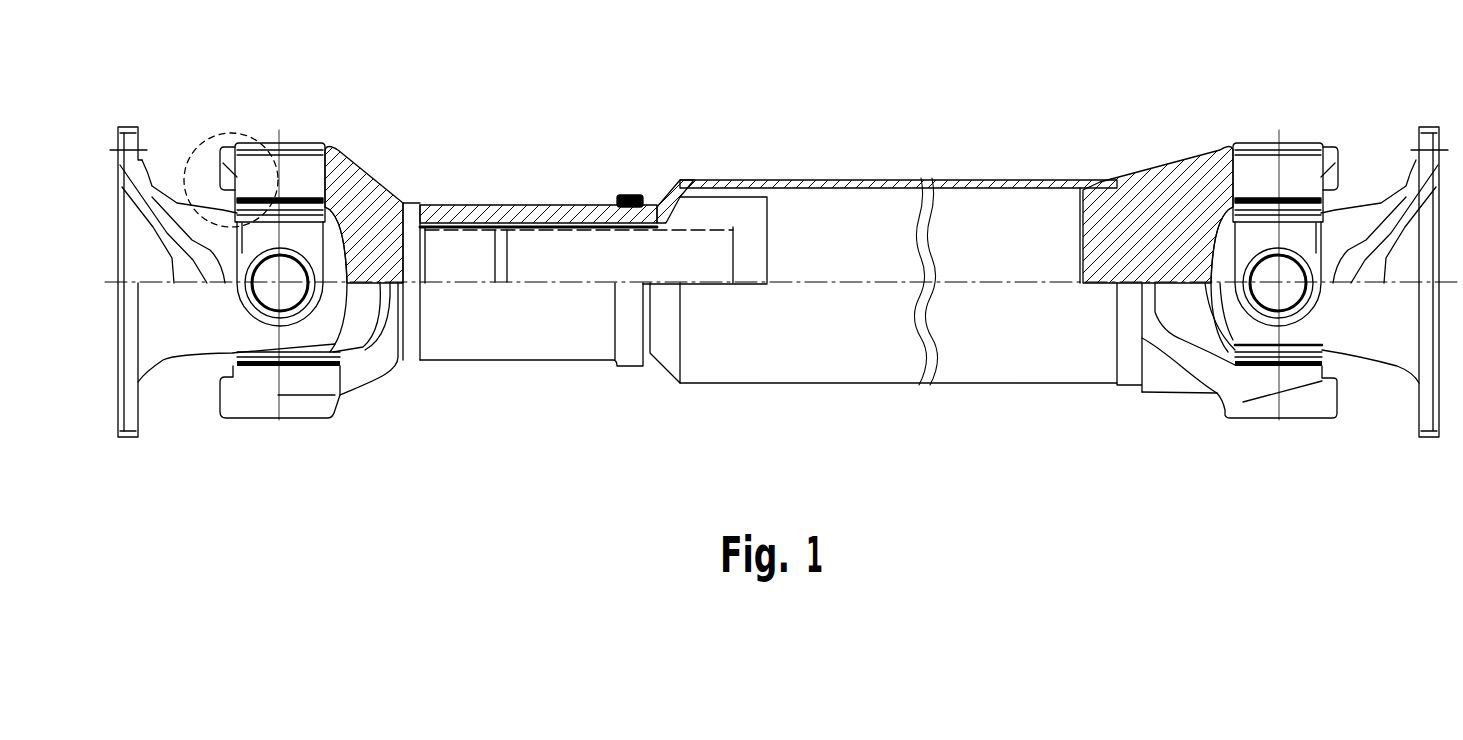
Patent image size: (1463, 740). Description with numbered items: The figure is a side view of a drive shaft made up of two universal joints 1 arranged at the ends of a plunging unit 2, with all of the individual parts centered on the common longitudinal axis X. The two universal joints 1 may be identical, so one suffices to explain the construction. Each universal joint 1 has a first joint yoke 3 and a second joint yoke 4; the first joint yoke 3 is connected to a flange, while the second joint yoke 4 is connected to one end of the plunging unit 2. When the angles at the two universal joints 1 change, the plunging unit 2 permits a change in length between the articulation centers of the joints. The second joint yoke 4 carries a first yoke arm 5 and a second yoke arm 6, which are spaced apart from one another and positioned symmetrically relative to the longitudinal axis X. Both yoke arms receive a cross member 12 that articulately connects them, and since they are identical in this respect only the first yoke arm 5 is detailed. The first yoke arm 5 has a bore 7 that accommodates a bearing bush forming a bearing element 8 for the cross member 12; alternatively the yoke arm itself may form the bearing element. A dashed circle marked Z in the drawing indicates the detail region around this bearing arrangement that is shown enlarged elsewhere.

The universal joint 1 is at (779, 287).
The plunging unit 2 is at (857, 155).
The first joint yoke 3 is at (150, 357).
The second joint yoke 4 is at (357, 360).
The first yoke arm 5 is at (343, 148).
The second yoke arm 6 is at (243, 407).
The bore 7 is at (240, 183).
The bearing element 8 is at (262, 180).
The cross member 12 is at (388, 186).
The detail region Z is at (195, 147).
The longitudinal axis X is at (1013, 285).